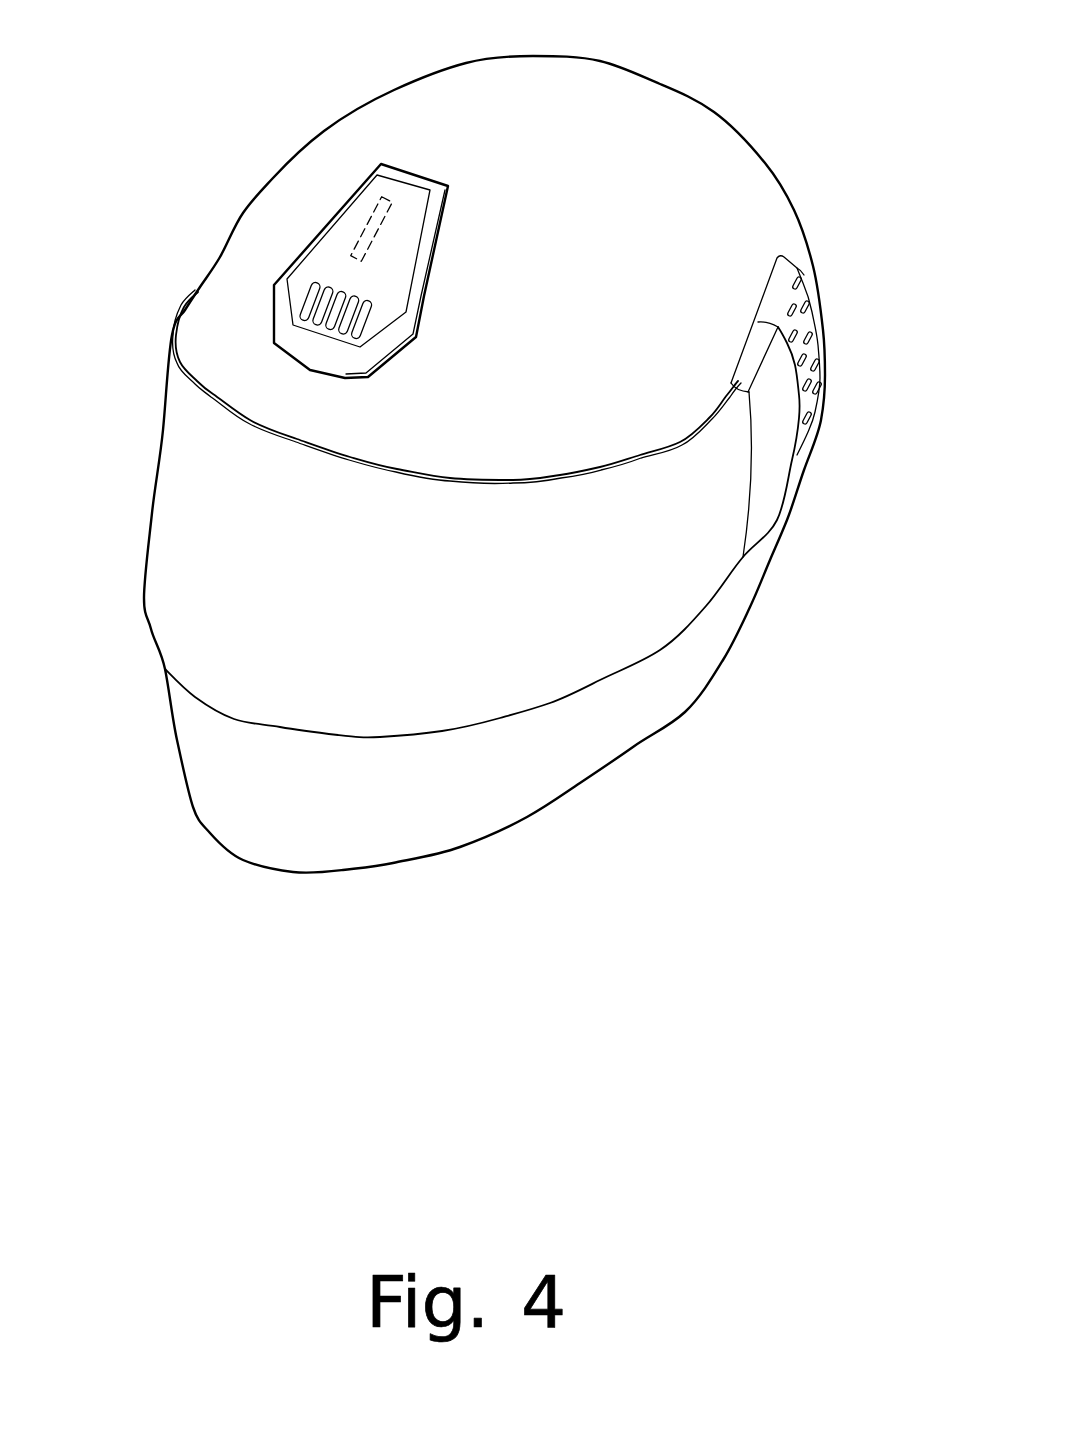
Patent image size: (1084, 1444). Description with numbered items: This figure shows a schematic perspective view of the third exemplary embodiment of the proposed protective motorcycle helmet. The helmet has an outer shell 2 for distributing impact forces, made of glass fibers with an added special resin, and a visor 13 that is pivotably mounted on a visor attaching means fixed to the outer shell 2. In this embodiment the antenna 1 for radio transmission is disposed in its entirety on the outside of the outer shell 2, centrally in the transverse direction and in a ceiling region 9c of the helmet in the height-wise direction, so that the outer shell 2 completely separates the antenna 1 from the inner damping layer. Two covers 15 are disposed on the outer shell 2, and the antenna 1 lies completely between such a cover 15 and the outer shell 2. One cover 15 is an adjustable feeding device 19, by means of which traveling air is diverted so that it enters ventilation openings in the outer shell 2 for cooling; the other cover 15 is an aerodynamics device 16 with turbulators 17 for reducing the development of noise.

The antenna 1 is at (373, 210).
The outer shell 2 is at (728, 170).
The ceiling region 9c is at (563, 110).
The visor 13 is at (601, 645).
The cover 15 is at (498, 300).
The aerodynamics device 16 is at (837, 351).
The turbulators 17 is at (813, 420).
The adjustable feeding device 19 is at (332, 257).